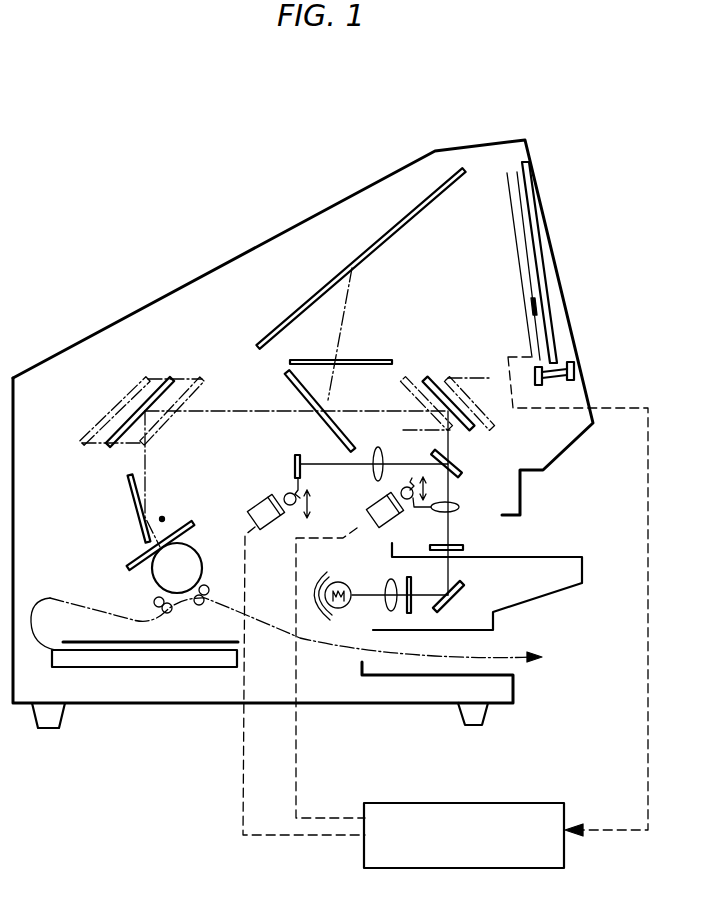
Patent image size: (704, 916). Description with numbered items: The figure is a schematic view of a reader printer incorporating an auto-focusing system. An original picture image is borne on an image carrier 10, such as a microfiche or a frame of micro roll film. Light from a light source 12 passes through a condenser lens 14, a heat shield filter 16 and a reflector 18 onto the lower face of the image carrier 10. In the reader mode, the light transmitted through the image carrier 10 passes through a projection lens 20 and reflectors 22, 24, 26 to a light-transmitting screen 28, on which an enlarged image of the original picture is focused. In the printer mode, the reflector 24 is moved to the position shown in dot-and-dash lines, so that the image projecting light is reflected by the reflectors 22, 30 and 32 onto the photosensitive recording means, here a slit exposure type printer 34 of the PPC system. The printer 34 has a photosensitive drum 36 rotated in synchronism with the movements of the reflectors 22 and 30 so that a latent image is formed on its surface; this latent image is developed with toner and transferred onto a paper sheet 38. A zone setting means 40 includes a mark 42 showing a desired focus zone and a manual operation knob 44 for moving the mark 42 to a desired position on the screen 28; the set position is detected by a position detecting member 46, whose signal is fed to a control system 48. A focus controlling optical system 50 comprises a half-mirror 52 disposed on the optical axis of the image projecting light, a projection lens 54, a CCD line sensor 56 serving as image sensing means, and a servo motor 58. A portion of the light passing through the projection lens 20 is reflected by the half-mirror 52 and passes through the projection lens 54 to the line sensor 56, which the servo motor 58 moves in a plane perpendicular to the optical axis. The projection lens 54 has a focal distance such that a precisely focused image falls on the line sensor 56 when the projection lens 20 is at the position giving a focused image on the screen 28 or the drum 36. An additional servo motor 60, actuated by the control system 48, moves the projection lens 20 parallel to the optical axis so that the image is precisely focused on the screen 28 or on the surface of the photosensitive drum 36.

The image carrier 10 is at (463, 547).
The light source 12 is at (338, 582).
The condenser lens 14 is at (384, 607).
The heat shield filter 16 is at (413, 612).
The reflector 18 is at (462, 596).
The projection lens 20 is at (462, 504).
The reflector 22 is at (430, 377).
The reflector 24 is at (287, 376).
The reflector 26 is at (302, 310).
The light-transmitting screen 28 is at (541, 246).
The reflector 30 is at (160, 378).
The reflector 32 is at (130, 482).
The slit exposure type printer 34 is at (98, 579).
The photosensitive drum 36 is at (152, 571).
The paper sheet 38 is at (228, 605).
The zone setting means 40 is at (553, 387).
The mark 42 is at (536, 306).
The manual operation knob 44 is at (571, 372).
The position detecting member 46 is at (507, 174).
The control system 48 is at (515, 802).
The focus controlling optical system 50 is at (298, 441).
The half-mirror 52 is at (462, 465).
The projection lens 54 is at (380, 458).
The CCD line sensor 56 is at (294, 460).
The servo motor 58 is at (263, 503).
The servo motor 60 is at (382, 500).